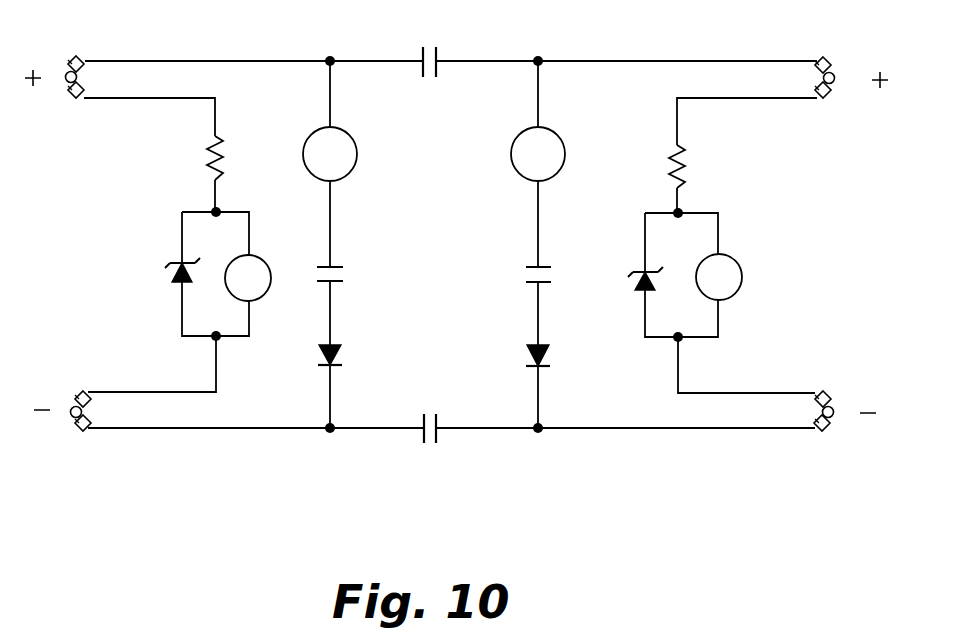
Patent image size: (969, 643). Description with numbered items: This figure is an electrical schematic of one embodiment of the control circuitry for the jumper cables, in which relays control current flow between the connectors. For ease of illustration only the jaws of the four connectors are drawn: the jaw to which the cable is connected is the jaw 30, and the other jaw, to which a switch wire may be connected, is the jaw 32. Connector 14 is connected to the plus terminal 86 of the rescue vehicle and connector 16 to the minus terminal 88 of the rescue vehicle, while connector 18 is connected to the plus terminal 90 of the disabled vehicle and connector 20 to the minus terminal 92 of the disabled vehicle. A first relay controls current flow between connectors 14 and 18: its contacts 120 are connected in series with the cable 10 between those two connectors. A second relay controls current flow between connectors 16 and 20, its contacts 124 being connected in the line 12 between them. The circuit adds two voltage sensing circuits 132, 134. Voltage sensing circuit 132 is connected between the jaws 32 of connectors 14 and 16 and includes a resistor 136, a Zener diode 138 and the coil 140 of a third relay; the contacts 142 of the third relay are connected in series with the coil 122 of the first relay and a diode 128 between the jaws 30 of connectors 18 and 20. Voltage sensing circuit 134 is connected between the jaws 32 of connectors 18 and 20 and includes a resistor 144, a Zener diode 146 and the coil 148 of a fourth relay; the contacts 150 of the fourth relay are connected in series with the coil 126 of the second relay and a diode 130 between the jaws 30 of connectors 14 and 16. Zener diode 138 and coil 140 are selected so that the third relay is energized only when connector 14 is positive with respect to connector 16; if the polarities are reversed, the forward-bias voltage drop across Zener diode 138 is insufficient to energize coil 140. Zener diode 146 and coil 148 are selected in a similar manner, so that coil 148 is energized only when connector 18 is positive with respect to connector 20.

The cable 10 is at (222, 62).
The negative supply line 12 is at (231, 432).
The connector 14 is at (822, 56).
The connector 16 is at (814, 433).
The connector 18 is at (79, 54).
The connector 20 is at (86, 433).
The jaw 30 is at (69, 61).
The jaw 32 is at (73, 99).
The plus terminal 86 is at (835, 75).
The minus terminal 88 is at (836, 412).
The plus terminal 90 is at (65, 80).
The minus terminal 92 is at (70, 414).
The contacts 120 is at (432, 79).
The coil 122 is at (357, 154).
The contacts 124 is at (434, 412).
The coil 126 is at (558, 170).
The diode 128 is at (340, 352).
The diode 130 is at (550, 352).
The voltage sensing circuit 132 is at (701, 265).
The voltage sensing circuit 134 is at (206, 274).
The resistor 136 is at (686, 158).
The Zener diode 138 is at (640, 270).
The coil 140 is at (743, 279).
The contacts 142 is at (342, 266).
The resistor 144 is at (208, 160).
The Zener diode 146 is at (178, 262).
The coil 148 is at (262, 263).
The contacts 150 is at (531, 265).